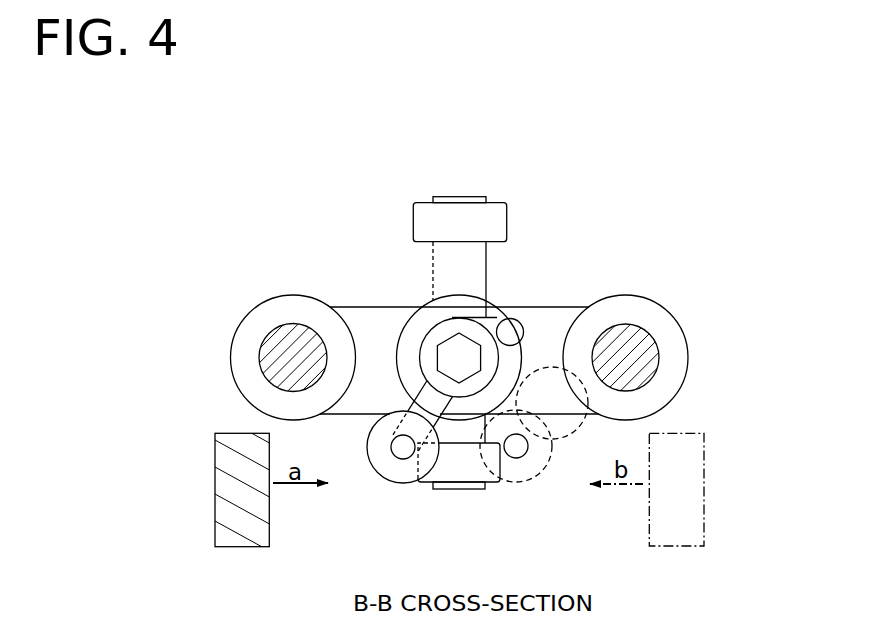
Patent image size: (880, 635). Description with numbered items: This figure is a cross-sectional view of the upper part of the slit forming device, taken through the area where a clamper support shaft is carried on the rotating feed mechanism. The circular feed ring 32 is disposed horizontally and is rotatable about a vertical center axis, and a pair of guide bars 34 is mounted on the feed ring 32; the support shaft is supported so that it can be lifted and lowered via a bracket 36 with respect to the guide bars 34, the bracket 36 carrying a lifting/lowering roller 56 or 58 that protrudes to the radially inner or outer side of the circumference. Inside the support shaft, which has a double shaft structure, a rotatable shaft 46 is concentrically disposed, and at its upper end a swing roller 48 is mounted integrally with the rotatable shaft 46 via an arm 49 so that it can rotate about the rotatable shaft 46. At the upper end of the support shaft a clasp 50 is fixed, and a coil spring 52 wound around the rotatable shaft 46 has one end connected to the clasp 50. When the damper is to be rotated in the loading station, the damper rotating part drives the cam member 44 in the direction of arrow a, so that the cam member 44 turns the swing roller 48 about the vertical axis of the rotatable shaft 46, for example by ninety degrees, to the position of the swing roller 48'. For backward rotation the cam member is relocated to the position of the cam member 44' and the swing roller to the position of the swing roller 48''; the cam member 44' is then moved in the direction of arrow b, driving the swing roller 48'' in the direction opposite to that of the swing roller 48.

The feed ring 32 is at (513, 362).
The guide bars 34 is at (298, 331).
The bracket 36 is at (368, 318).
The cam member 44 is at (210, 482).
The cam member 44' is at (720, 489).
The rotatable shaft 46 is at (438, 327).
The swing roller 48 is at (403, 479).
The swing roller 48' is at (565, 456).
The swing roller 48'' is at (516, 478).
The arm 49 is at (407, 398).
The clasp 50 is at (513, 328).
The coil spring 52 is at (480, 318).
The lifting/lowering roller 56 is at (490, 208).
The lifting/lowering roller 58 is at (453, 473).